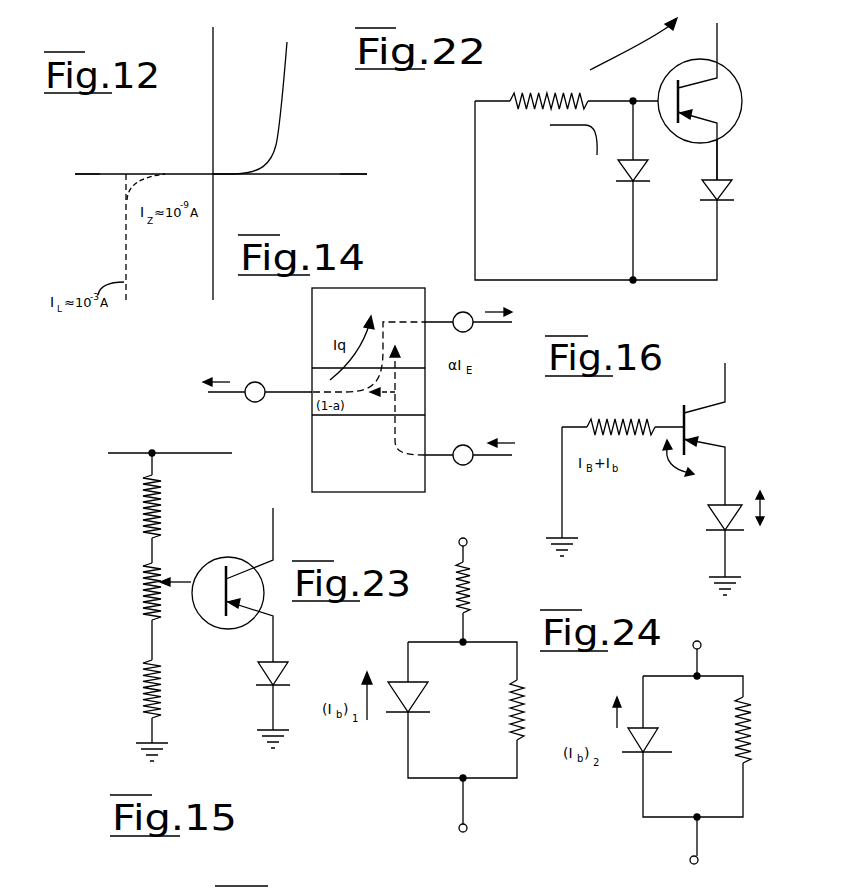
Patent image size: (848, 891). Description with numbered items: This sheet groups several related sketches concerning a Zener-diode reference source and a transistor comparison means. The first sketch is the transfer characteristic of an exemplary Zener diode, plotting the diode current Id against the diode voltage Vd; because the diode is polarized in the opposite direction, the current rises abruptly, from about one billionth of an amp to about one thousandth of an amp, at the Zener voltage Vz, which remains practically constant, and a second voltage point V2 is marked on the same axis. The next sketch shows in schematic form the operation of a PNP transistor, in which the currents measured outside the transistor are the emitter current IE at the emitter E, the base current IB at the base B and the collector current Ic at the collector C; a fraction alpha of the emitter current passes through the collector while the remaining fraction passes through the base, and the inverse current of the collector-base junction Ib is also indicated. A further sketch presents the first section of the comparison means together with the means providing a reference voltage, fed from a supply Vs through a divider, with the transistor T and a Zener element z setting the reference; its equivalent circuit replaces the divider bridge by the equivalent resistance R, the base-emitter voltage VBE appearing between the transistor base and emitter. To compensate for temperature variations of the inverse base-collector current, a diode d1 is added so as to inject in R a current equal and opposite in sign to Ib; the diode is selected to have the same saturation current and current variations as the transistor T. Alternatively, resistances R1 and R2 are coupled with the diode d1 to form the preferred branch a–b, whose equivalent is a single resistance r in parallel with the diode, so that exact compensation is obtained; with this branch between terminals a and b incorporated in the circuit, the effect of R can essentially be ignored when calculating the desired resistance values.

In FIG. 12, the diode current Id is at (250, 108).
In FIG. 22, the diode current Id is at (633, 44).
In FIG. 12, the diode voltage Vd is at (367, 165).
In FIG. 12, the voltage V2 is at (74, 160).
In FIG. 12, the Zener voltage Vz is at (144, 222).
In FIG. 16, the Zener voltage Vz is at (747, 543).
In FIG. 22, the resistance equivalent to the divider bridge R is at (549, 91).
In FIG. 16, the resistance equivalent to the divider bridge R is at (621, 416).
In FIG. 22, the branch terminal a is at (632, 91).
In FIG. 24, the branch terminal a is at (704, 658).
In FIG. 22, the branch terminal b is at (631, 292).
In FIG. 24, the branch terminal b is at (703, 844).
In FIG. 22, the transistor T is at (710, 83).
In FIG. 16, the transistor T is at (704, 434).
In FIG. 15, the transistor T is at (232, 585).
In FIG. 22, the diode d1 is at (608, 183).
In FIG. 23, the diode d1 is at (416, 697).
In FIG. 22, the inverse current of the collector-base junction Ib is at (572, 142).
In FIG. 14, the collector C is at (468, 333).
In FIG. 14, the emitter E is at (468, 467).
In FIG. 14, the base B is at (260, 402).
In FIG. 14, the collector current Ic is at (498, 305).
In FIG. 14, the emitter current IE is at (501, 434).
In FIG. 14, the base current IB is at (216, 374).
In FIG. 16, the base-emitter voltage VBE is at (667, 475).
In FIG. 15, the supply voltage Vs is at (170, 465).
In FIG. 15, the zener diode z is at (278, 705).
In FIG. 23, the resistor R1 is at (529, 710).
In FIG. 23, the resistor R2 is at (475, 587).
In FIG. 24, the resistor r is at (749, 730).